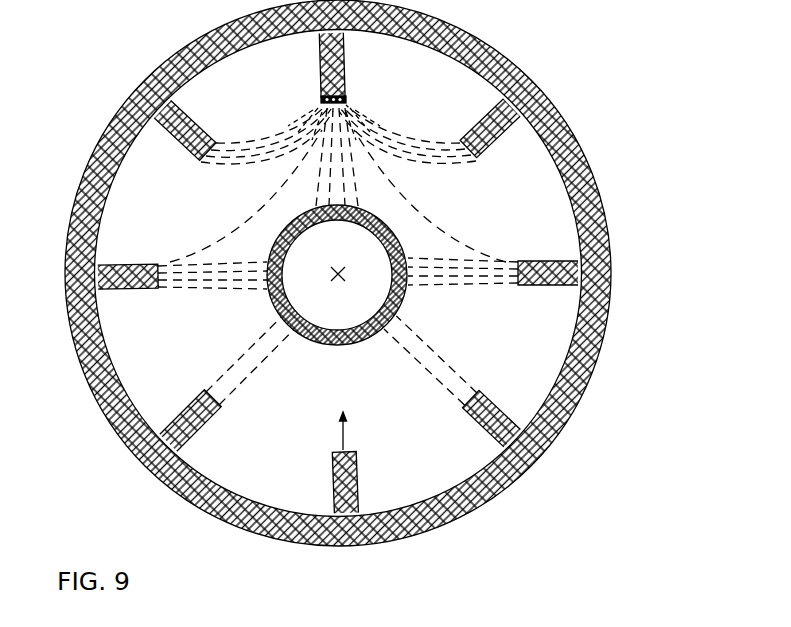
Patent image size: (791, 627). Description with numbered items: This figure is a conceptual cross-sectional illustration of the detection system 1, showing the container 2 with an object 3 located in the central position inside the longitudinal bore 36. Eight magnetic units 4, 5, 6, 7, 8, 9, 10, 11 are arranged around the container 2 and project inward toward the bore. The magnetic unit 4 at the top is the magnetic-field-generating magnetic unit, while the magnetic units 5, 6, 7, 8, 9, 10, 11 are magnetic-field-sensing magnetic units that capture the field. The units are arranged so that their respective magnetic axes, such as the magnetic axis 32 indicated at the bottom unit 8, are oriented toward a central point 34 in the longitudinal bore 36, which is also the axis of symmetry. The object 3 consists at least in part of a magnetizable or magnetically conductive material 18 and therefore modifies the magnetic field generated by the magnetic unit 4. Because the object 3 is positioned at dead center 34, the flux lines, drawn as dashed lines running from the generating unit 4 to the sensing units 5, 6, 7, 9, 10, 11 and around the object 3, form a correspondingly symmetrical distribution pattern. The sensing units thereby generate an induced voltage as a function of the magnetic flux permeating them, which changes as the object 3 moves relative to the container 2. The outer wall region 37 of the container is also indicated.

The detection system 1 is at (373, 273).
The container 2 is at (577, 132).
The object 3 is at (474, 273).
The magnetizable or magnetically conductive material 18 is at (402, 229).
The magnetic-field-generating magnetic unit 4 is at (355, 63).
The magnetic-field-sensing magnetic unit 5 is at (168, 143).
The magnetic-field-sensing magnetic unit 6 is at (128, 297).
The magnetic-field-sensing magnetic unit 7 is at (208, 442).
The magnetic-field-sensing magnetic unit 8 is at (367, 482).
The magnetic-field-sensing magnetic unit 9 is at (512, 408).
The magnetic-field-sensing magnetic unit 10 is at (550, 293).
The magnetic-field-sensing magnetic unit 11 is at (500, 140).
The magnetic axis 32 is at (343, 436).
The central point 34 is at (337, 283).
The longitudinal bore 36 is at (225, 210).
The outer wall 37 is at (367, 273).